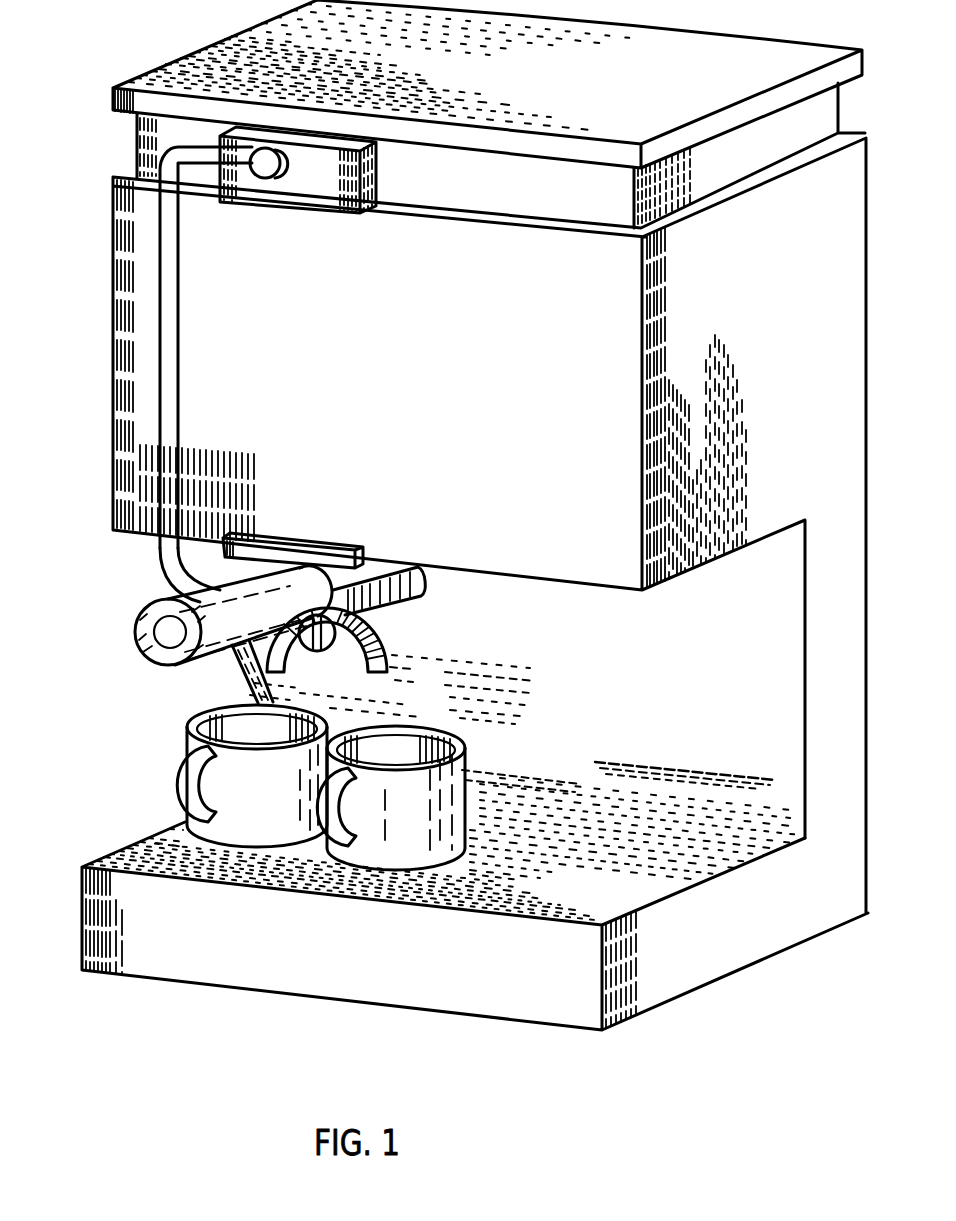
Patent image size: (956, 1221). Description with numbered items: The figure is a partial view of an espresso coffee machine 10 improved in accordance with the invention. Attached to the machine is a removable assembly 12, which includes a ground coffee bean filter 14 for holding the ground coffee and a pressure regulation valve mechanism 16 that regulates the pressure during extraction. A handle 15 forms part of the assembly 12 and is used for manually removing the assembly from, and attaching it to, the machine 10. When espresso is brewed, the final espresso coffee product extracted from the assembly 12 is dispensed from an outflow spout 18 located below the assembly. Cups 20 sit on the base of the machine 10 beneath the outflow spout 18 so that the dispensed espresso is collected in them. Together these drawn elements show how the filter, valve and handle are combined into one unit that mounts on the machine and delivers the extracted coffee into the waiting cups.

The espresso coffee machine 10 is at (408, 333).
The assembly 12 is at (130, 636).
The ground coffee bean filter 14 is at (423, 583).
The handle 15 is at (153, 600).
The pressure regulation valve mechanism 16 is at (377, 617).
The outflow spout 18 is at (380, 664).
The cups 20 is at (450, 772).